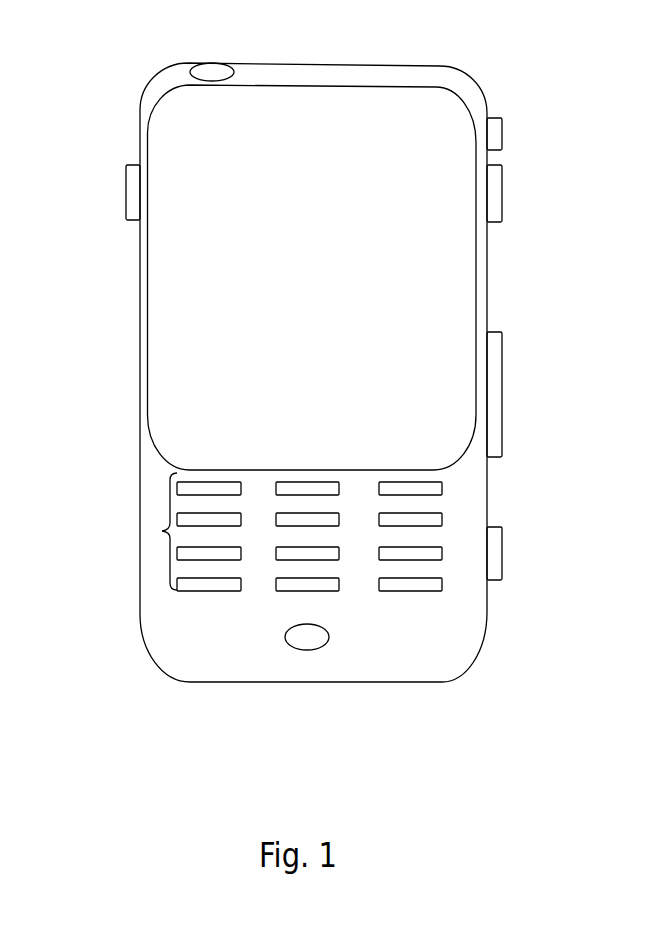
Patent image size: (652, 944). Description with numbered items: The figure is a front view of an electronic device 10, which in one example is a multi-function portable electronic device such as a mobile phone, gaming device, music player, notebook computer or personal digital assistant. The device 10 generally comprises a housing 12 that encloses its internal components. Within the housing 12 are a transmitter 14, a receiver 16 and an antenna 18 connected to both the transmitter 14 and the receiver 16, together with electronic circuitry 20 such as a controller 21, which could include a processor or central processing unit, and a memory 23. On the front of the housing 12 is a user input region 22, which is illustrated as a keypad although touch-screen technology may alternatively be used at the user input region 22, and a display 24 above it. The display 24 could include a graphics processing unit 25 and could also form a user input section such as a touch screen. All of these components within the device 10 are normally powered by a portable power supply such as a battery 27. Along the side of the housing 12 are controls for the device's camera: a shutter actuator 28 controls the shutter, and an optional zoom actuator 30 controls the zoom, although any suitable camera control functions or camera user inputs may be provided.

The electronic device 10 is at (494, 703).
The housing 12 is at (444, 80).
The transmitter 14 is at (158, 588).
The receiver 16 is at (168, 637).
The antenna 18 is at (160, 470).
The electronic circuitry 20 is at (473, 518).
The controller 21 is at (484, 518).
The user input region 22 is at (150, 530).
The memory 23 is at (463, 638).
The display 24 is at (215, 262).
The graphics processing unit 25 is at (187, 672).
The battery 27 is at (386, 667).
The shutter actuator 28 is at (502, 534).
The zoom actuator 30 is at (503, 360).